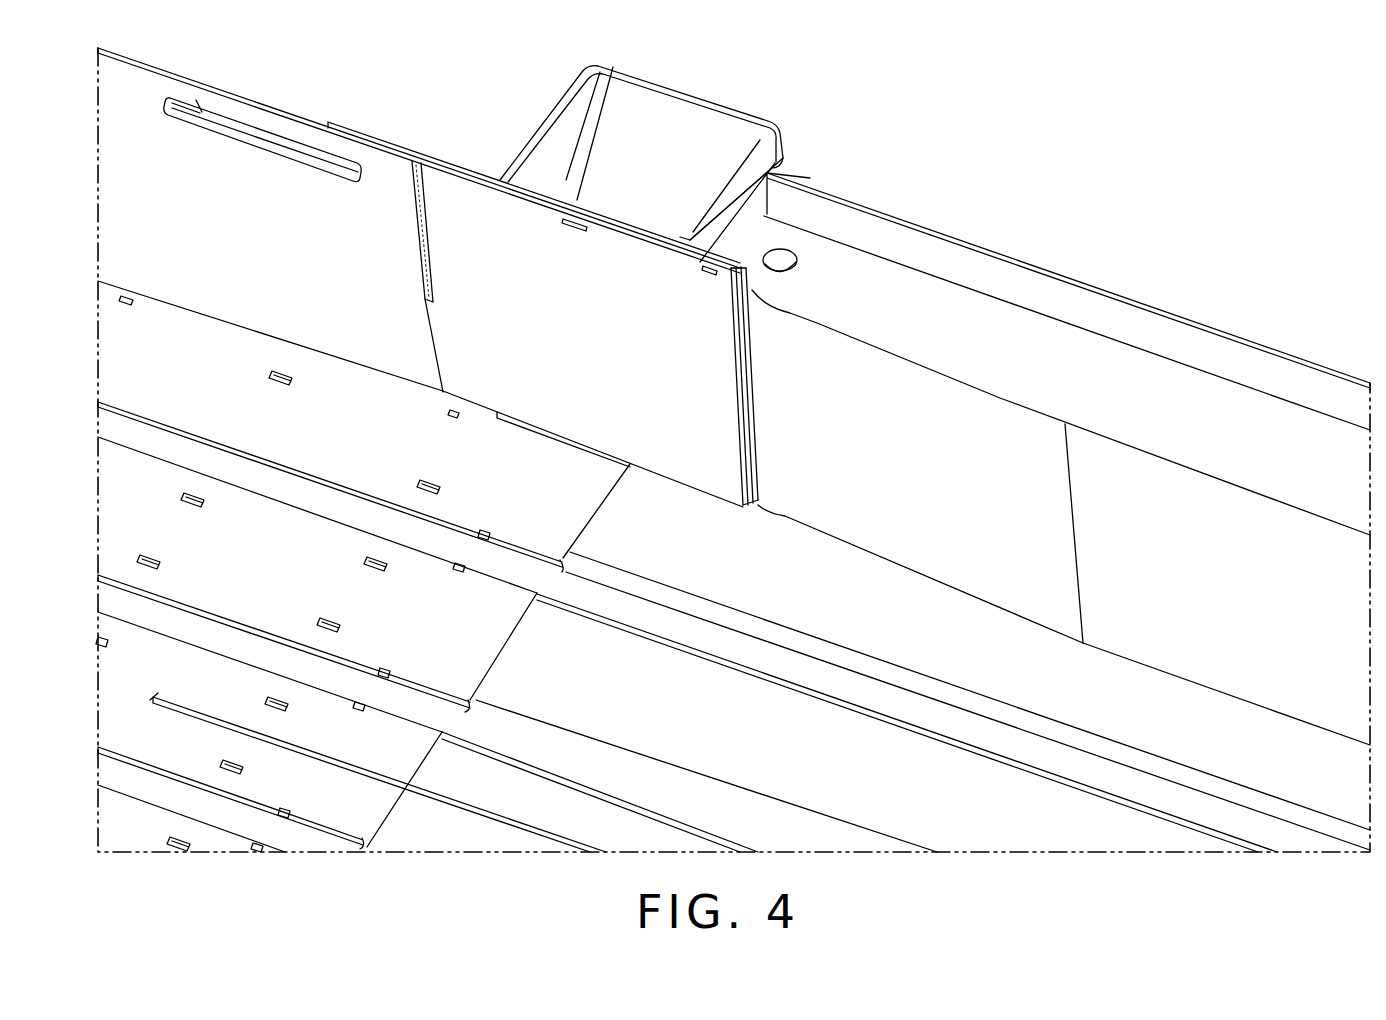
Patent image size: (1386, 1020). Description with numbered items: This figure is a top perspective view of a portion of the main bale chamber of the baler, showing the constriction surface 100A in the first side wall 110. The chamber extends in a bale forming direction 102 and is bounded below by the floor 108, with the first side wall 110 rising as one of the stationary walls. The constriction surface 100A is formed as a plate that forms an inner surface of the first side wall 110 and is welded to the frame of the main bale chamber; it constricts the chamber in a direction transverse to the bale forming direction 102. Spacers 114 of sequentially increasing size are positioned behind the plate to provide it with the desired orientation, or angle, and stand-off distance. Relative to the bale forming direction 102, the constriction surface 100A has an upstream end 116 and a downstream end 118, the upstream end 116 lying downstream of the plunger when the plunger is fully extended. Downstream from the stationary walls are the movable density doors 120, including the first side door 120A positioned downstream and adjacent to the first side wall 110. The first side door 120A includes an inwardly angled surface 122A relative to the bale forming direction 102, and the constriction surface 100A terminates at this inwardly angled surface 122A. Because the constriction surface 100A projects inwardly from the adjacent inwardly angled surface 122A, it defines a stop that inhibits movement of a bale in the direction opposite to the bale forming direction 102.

The bale forming direction 102 is at (280, 585).
The floor 108 is at (156, 487).
The first side wall 110 is at (289, 100).
The spacers 114 is at (567, 233).
The upstream end 116 is at (447, 338).
The downstream end 118 is at (740, 470).
The constriction surface 100A is at (552, 359).
The density doors 120 is at (1061, 459).
The first side door 120A is at (1205, 402).
The inwardly angled surface 122A is at (950, 418).